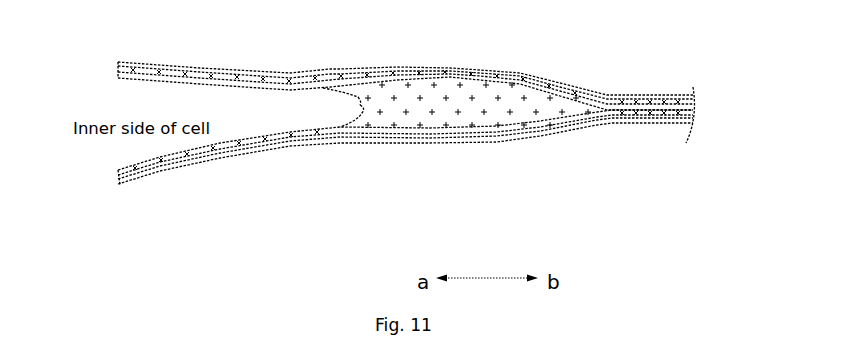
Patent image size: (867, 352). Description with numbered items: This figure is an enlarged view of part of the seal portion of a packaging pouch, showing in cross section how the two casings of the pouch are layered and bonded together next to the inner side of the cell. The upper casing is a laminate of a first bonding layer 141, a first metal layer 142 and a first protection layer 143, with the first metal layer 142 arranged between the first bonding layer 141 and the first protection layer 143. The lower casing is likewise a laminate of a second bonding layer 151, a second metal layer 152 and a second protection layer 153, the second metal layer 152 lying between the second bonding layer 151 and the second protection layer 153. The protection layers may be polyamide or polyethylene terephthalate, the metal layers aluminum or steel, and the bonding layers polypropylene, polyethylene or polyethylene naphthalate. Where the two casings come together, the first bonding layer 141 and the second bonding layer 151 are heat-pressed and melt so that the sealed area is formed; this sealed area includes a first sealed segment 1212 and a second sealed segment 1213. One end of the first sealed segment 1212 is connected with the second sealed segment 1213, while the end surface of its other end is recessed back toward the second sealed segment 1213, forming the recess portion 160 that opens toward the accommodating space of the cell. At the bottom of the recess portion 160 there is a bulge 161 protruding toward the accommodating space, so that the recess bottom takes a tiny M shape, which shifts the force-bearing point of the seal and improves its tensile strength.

The first bonding layer 141 is at (595, 105).
The first metal layer 142 is at (120, 65).
The first protection layer 143 is at (138, 75).
The second bonding layer 151 is at (628, 113).
The second metal layer 152 is at (137, 180).
The second protection layer 153 is at (165, 172).
The recess portion 160 is at (337, 107).
The bulge 161 is at (363, 98).
The first sealed segment 1212 is at (498, 100).
The second sealed segment 1213 is at (663, 110).